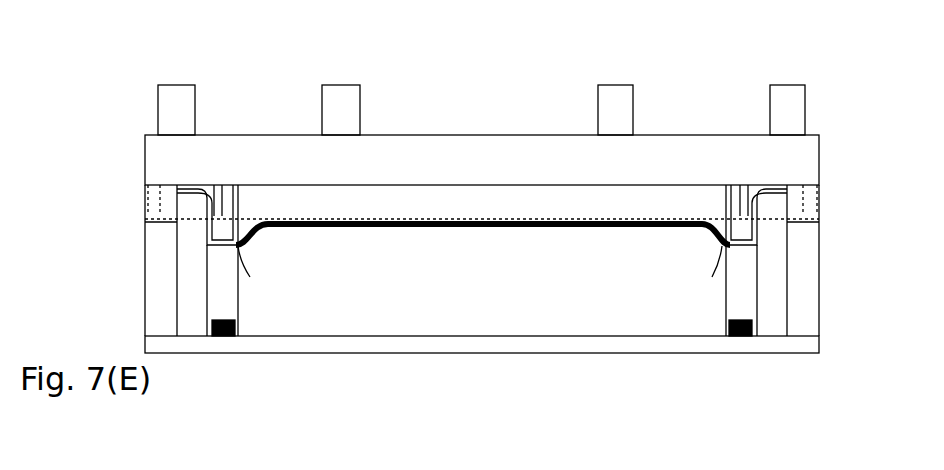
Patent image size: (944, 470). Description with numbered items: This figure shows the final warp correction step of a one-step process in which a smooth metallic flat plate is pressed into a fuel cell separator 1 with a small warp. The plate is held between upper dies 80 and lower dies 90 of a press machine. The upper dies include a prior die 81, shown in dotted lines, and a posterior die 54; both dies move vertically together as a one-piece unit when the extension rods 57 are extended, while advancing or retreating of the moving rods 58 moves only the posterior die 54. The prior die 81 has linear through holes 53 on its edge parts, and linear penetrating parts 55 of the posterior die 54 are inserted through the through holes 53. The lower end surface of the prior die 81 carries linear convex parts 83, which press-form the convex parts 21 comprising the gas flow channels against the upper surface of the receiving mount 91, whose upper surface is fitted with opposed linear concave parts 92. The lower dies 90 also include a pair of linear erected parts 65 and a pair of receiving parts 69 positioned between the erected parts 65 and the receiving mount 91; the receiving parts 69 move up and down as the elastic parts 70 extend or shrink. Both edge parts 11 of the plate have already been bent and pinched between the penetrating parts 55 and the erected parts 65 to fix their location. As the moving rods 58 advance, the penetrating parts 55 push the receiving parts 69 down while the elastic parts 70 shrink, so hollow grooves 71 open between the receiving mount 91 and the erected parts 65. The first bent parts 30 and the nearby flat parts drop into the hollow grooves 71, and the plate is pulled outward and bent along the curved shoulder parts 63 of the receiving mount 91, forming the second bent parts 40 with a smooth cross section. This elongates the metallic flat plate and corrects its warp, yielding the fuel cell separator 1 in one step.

The fuel cell separator 1 is at (512, 222).
The both edge parts 11 is at (222, 215).
The convex parts 21 is at (453, 228).
The first bent parts 30 is at (208, 238).
The second bent parts 40 is at (250, 220).
The through holes 53 is at (170, 196).
The posterior die 54 is at (160, 160).
The penetrating parts 55 is at (245, 185).
The extension rods 57 is at (348, 100).
The moving rods 58 is at (163, 108).
The shoulder parts 63 is at (265, 226).
The erected parts 65 is at (200, 288).
The receiving parts 69 is at (228, 268).
The elastic parts 70 is at (232, 337).
The hollow grooves 71 is at (250, 277).
The upper dies 80 is at (152, 92).
The prior die 81 is at (152, 208).
The linear convex parts 83 is at (428, 220).
The lower dies 90 is at (198, 358).
The receiving mount 91 is at (417, 297).
The linear concave parts 92 is at (523, 228).